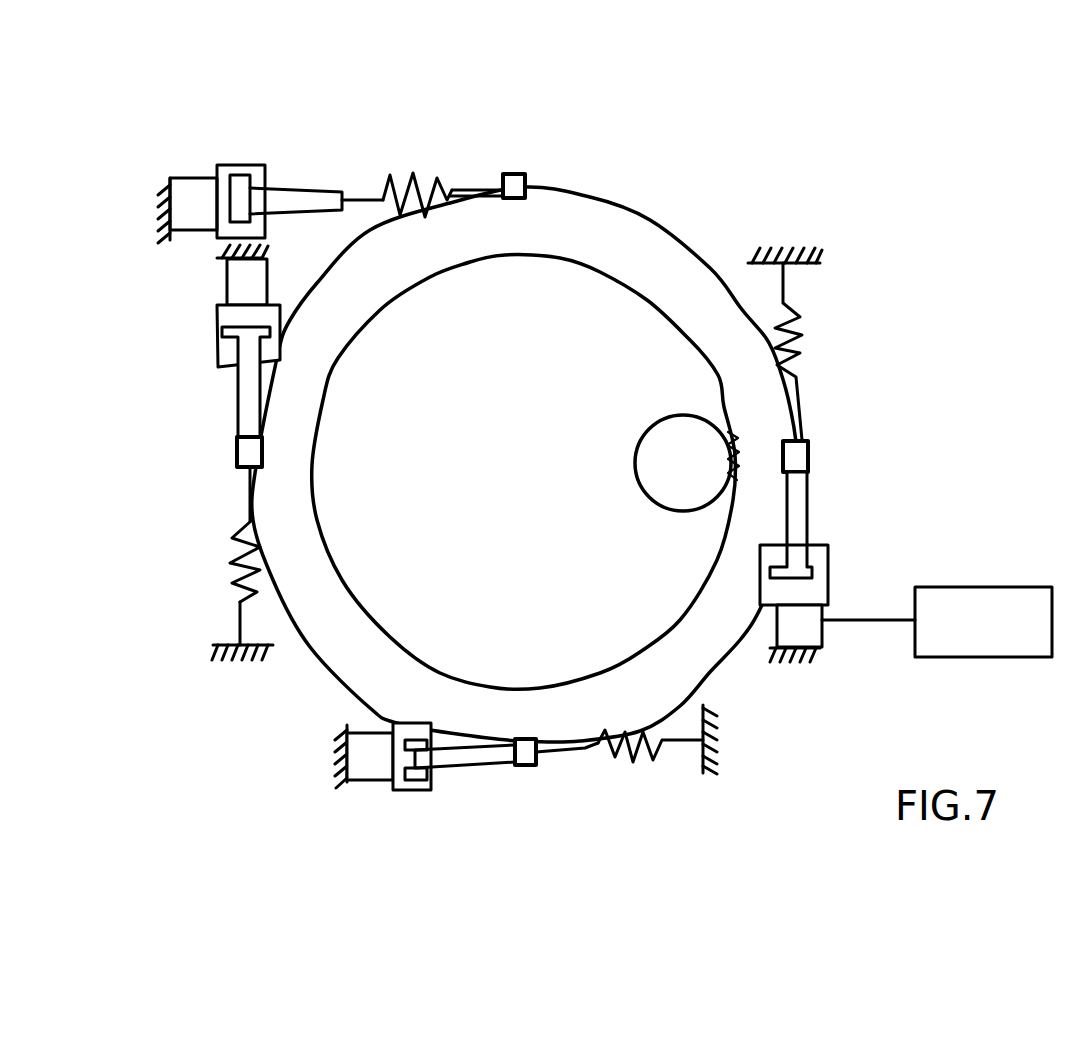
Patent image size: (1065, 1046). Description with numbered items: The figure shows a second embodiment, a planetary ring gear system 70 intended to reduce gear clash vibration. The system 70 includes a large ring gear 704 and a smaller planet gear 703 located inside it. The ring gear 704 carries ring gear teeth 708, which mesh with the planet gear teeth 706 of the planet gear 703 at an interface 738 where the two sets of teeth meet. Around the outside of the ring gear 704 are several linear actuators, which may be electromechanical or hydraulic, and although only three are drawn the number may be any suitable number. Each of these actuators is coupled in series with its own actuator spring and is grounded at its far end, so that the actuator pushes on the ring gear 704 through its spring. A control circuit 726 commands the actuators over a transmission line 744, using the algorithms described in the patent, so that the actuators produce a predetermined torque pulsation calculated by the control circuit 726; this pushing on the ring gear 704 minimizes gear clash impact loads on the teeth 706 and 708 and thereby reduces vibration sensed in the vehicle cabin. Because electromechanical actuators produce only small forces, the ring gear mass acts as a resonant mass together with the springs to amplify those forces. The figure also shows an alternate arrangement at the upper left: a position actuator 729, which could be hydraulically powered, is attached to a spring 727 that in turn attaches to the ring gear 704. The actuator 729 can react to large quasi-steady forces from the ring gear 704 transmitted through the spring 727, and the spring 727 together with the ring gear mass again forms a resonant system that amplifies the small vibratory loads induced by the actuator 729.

The planetary ring gear system 70 is at (934, 54).
The ring gear 704 is at (612, 231).
The ring gear teeth 708 is at (645, 300).
The planet gear 703 is at (665, 478).
The planet gear teeth 706 is at (728, 438).
The interface 738 is at (735, 441).
The spring 727 is at (410, 170).
The position actuator 729 is at (293, 187).
The transmission line 744 is at (870, 620).
The control circuit 726 is at (985, 657).